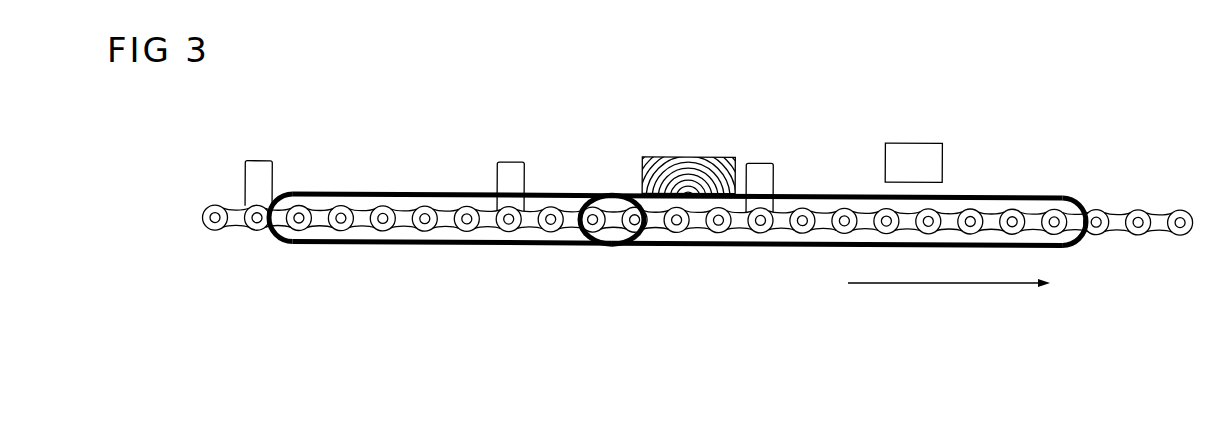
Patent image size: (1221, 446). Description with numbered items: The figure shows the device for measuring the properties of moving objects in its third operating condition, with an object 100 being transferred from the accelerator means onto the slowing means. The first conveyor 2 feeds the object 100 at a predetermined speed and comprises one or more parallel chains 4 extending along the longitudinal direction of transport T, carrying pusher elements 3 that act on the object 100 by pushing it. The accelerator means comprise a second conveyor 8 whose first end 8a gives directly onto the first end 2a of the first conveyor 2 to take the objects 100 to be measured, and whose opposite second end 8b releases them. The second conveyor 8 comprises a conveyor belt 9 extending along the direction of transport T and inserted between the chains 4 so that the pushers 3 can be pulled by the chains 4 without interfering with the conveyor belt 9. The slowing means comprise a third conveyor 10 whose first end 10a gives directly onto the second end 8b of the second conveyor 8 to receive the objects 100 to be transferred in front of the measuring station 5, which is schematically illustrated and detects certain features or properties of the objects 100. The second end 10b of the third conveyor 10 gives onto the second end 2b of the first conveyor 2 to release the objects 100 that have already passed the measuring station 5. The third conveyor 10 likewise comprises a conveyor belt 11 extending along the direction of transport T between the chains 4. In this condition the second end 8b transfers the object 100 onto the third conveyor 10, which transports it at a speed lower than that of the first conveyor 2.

The first conveyor 2 is at (671, 205).
The first end of the first conveyor 2a is at (231, 206).
The second end of the first conveyor 2b is at (1122, 203).
The pusher element 3 is at (512, 178).
The chain 4 is at (717, 216).
The measuring station 5 is at (929, 140).
The second conveyor 8 is at (441, 144).
The first end of the second conveyor 8a is at (290, 190).
The second end of the second conveyor 8b is at (590, 247).
The conveyor belt 9 is at (400, 244).
The third conveyor 10 is at (849, 144).
The first end of the third conveyor 10a is at (637, 247).
The second end of the third conveyor 10b is at (1015, 190).
The conveyor belt 11 is at (823, 248).
The object 100 is at (660, 182).
The direction of transport T is at (923, 285).